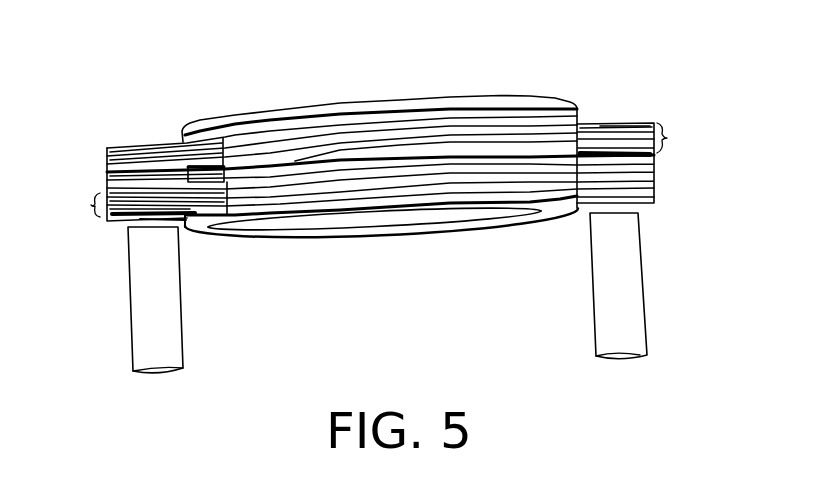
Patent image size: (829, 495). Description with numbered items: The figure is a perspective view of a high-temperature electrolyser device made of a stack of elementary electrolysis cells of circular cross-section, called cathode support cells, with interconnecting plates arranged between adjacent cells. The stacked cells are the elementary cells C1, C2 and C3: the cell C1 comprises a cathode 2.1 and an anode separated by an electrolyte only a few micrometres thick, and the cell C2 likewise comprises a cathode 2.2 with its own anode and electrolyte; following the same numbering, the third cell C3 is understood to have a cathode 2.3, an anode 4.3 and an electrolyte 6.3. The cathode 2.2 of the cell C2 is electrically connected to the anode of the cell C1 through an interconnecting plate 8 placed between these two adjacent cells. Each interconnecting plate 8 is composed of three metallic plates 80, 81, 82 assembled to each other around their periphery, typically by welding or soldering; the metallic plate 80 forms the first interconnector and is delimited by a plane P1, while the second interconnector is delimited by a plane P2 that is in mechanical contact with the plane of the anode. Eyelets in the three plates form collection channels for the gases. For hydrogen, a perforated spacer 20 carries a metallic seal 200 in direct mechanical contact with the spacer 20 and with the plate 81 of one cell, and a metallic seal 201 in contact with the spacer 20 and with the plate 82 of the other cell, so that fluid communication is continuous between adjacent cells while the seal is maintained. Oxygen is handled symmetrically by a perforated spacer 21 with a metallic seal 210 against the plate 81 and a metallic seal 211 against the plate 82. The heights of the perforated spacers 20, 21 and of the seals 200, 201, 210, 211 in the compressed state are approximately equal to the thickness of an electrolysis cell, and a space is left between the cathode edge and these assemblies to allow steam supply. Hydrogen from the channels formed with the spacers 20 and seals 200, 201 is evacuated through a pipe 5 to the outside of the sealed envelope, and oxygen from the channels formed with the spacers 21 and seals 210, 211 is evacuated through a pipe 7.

The cathode 2.1 is at (257, 115).
The cathode 2.2 is at (330, 157).
The inner winding turn of coil 2.3 is at (260, 213).
The rim of carrier plate 4.3 is at (397, 222).
The bottom face of carrier plate 6.3 is at (210, 230).
The elementary cell C1 is at (413, 112).
The elementary cell C2 is at (467, 157).
The elementary cell C3 is at (536, 208).
The plane P1 is at (490, 167).
The plane P2 is at (532, 108).
The interconnecting plate 8 is at (381, 172).
The metallic plate 80 is at (138, 226).
The metallic plate 81 is at (115, 182).
The metallic plate 82 is at (110, 223).
The perforated spacer 20 is at (656, 174).
The metallic seal 200 is at (649, 200).
The metallic seal 201 is at (656, 162).
The perforated spacer 21 is at (165, 170).
The metallic seal 210 is at (115, 166).
The metallic seal 211 is at (157, 178).
The pipe 5 is at (632, 326).
The pipe 7 is at (148, 336).